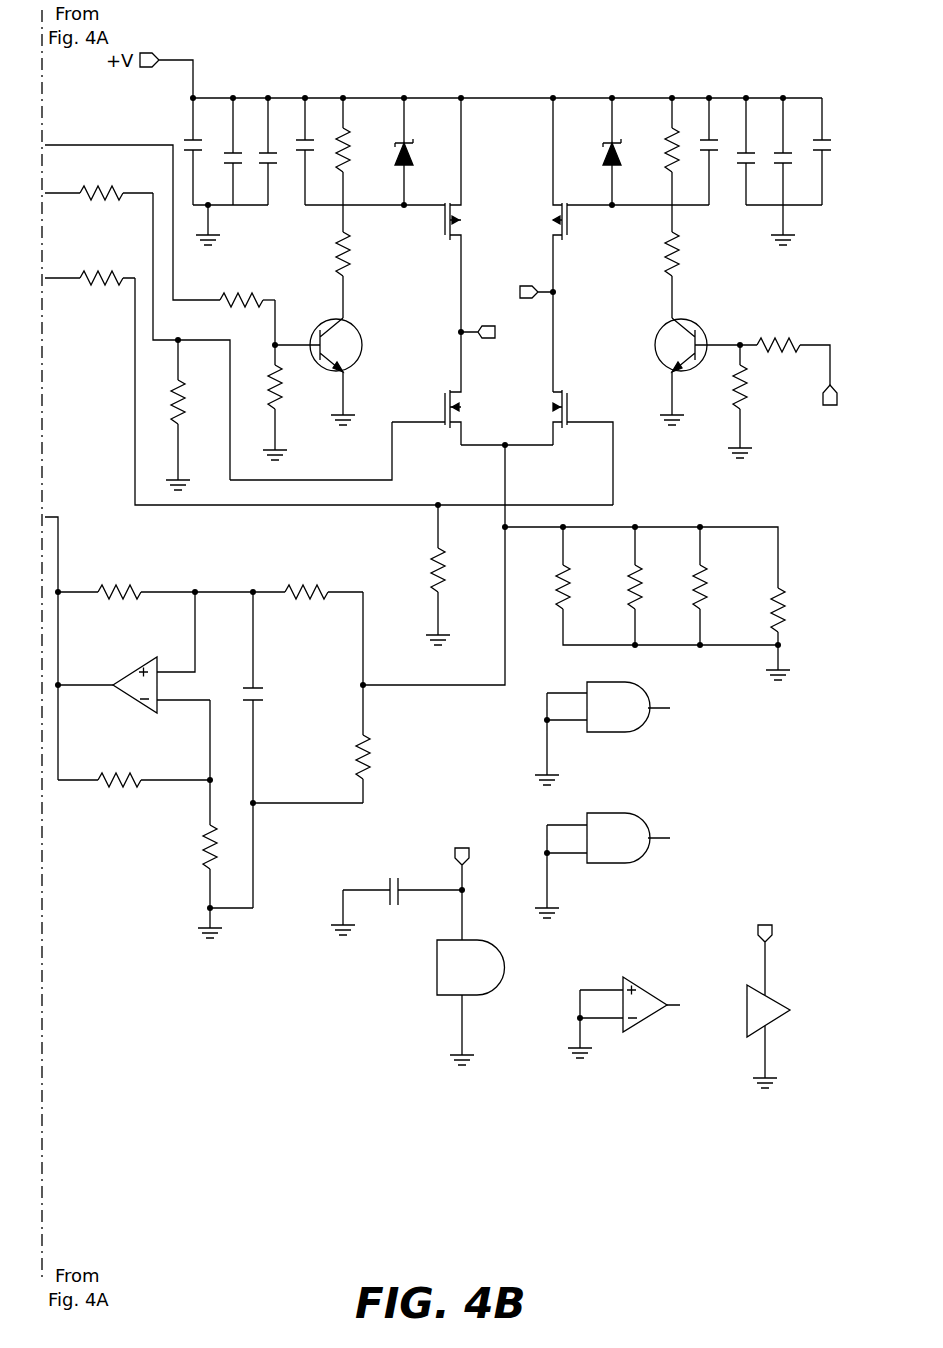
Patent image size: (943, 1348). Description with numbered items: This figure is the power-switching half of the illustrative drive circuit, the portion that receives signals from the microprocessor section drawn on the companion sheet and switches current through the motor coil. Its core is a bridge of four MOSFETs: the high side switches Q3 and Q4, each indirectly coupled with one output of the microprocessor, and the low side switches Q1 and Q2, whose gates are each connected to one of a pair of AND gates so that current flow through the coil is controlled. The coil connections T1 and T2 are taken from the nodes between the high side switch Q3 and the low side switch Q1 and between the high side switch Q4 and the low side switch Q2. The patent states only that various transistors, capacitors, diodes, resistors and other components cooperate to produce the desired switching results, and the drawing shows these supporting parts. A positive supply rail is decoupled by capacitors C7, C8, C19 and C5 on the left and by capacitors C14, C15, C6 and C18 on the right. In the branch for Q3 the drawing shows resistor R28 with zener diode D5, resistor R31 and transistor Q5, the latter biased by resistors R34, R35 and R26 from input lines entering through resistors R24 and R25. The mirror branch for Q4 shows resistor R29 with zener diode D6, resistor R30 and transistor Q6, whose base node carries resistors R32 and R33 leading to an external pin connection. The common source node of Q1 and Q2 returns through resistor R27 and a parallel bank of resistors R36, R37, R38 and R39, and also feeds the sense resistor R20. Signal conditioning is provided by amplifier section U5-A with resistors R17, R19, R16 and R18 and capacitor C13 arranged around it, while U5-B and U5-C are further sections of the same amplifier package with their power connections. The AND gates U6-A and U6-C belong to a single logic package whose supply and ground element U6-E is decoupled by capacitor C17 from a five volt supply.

The capacitor C7 is at (182, 151).
The capacitor C8 is at (223, 151).
The capacitor C19 is at (260, 151).
The capacitor C5 is at (298, 151).
The resistor R28 is at (360, 151).
The zener diode D5 is at (419, 151).
The resistor R31 is at (358, 261).
The high side switch Q3 is at (468, 215).
The high side switch Q4 is at (541, 245).
The zener diode D6 is at (593, 151).
The resistor R29 is at (658, 151).
The resistor R30 is at (688, 261).
The capacitor C14 is at (723, 151).
The capacitor C15 is at (735, 151).
The capacitor C6 is at (786, 151).
The capacitor C18 is at (832, 151).
The terminal T1 is at (490, 331).
The terminal T2 is at (525, 279).
The low side switch Q1 is at (468, 388).
The low side switch Q2 is at (543, 417).
The resistor R24 is at (99, 179).
The resistor R25 is at (91, 264).
The resistor R34 is at (238, 287).
The resistor R26 is at (191, 415).
The resistor R35 is at (293, 400).
The bipolar transistor Q5 is at (331, 363).
The bipolar transistor Q6 is at (692, 366).
The resistor R32 is at (785, 346).
The resistor R33 is at (753, 401).
The resistor R27 is at (454, 575).
The resistor R36 is at (545, 579).
The resistor R37 is at (613, 586).
The resistor R38 is at (679, 586).
The resistor R39 is at (762, 620).
The resistor R17 is at (155, 575).
The resistor R19 is at (308, 575).
The operational amplifier U5-A is at (134, 658).
The capacitor C13 is at (271, 750).
The sense resistor R20 is at (413, 697).
The resistor R16 is at (134, 763).
The resistor R18 is at (191, 819).
The AND gate 74HCT08M U6-A is at (602, 727).
The AND gate 74HCT08M U6-C is at (602, 859).
The capacitor C17 is at (396, 895).
The 74HCT08M power/ground U6-E is at (504, 944).
The operational amplifier U5-B is at (625, 1004).
The operational amplifier power U5-C is at (790, 994).